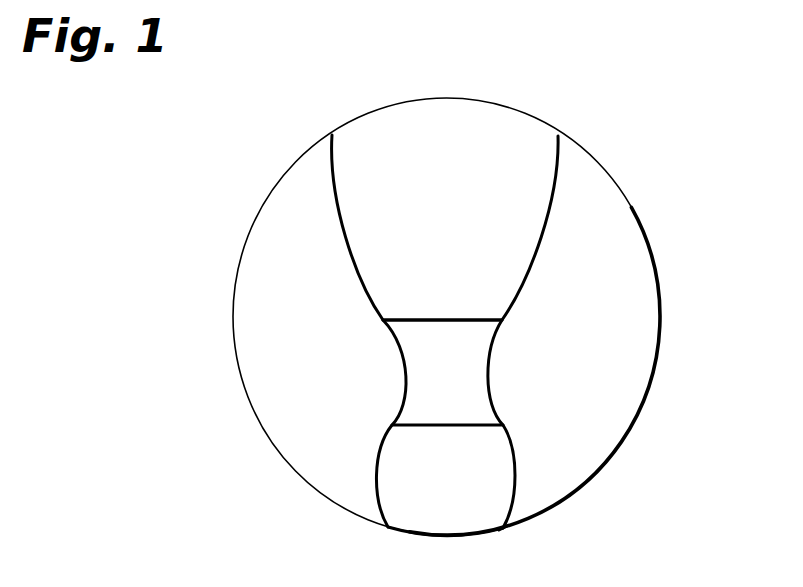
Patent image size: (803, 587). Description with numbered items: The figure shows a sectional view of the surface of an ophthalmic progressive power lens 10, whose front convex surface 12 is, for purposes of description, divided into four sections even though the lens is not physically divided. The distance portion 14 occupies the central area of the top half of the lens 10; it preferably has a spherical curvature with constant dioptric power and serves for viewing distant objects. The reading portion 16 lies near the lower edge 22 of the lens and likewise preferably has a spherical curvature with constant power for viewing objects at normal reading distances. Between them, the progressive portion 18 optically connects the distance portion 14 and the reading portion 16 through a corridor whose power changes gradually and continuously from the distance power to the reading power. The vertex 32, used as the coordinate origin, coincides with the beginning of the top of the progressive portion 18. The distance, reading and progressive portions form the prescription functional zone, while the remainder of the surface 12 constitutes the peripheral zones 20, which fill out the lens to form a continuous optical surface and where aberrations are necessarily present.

The ophthalmic progressive power lens 10 is at (634, 210).
The front convex surface 12 is at (645, 282).
The distance portion 14 is at (345, 138).
The reading portion 16 is at (407, 510).
The progressive portion 18 is at (457, 395).
The peripheral zones 20 is at (253, 348).
The lower edge 22 is at (493, 532).
The vertex 32 is at (438, 320).